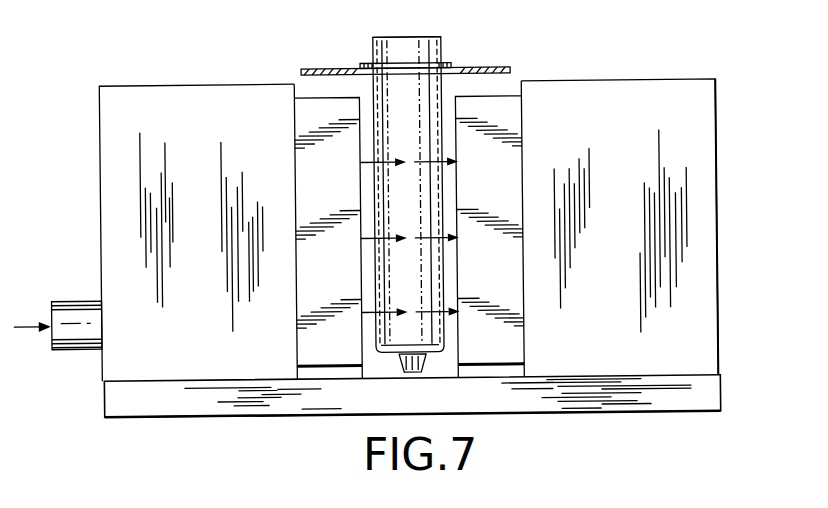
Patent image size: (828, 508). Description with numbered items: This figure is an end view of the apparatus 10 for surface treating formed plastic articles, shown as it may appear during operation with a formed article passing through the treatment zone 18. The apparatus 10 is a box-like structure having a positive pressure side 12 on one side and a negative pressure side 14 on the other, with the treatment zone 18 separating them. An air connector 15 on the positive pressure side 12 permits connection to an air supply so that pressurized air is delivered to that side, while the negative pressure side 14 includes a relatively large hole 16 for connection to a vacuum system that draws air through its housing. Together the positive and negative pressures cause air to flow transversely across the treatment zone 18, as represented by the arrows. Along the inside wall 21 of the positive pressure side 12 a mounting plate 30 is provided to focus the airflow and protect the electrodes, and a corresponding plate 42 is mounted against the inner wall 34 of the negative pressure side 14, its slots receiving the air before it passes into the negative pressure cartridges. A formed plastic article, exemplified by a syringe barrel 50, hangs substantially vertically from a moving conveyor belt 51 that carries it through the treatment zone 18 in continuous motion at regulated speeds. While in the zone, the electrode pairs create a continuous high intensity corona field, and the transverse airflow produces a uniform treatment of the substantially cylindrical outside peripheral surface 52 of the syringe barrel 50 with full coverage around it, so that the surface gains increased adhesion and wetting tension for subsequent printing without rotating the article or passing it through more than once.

The apparatus 10 is at (216, 28).
The positive pressure side 12 is at (171, 94).
The negative pressure side 14 is at (636, 90).
The air connector 15 is at (76, 298).
The hole 16 is at (717, 240).
The treatment zone 18 is at (378, 366).
The inside wall 21 is at (297, 92).
The mounting plate 30 is at (300, 338).
The inner wall 34 is at (520, 82).
The plate 42 is at (514, 345).
The syringe barrel 50 is at (442, 38).
The conveyor belt 51 is at (495, 70).
The outside peripheral surface 52 is at (384, 90).